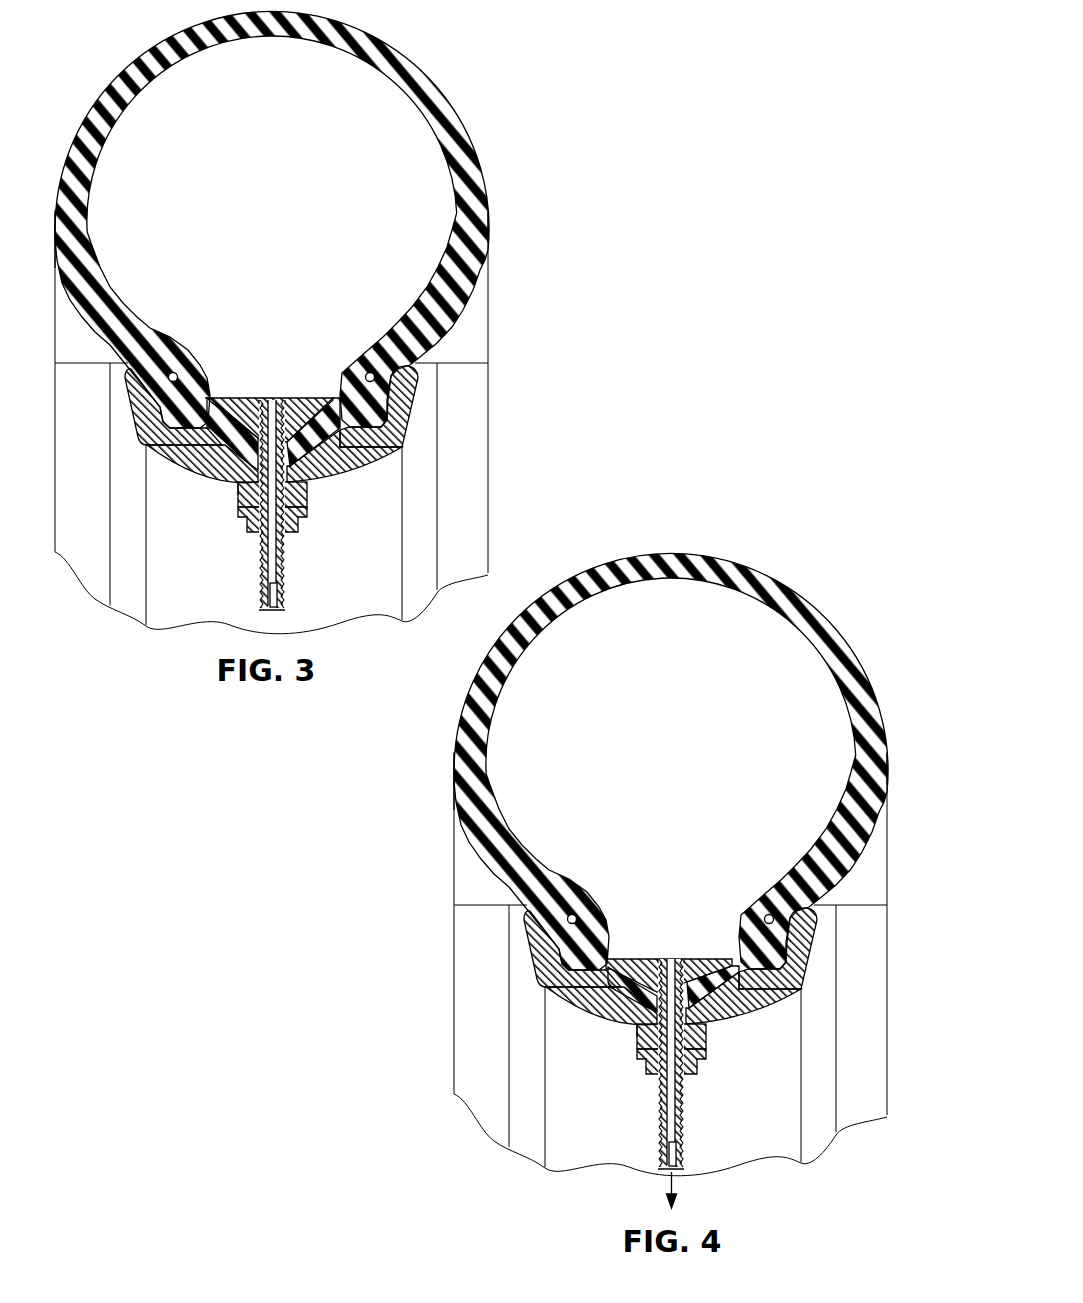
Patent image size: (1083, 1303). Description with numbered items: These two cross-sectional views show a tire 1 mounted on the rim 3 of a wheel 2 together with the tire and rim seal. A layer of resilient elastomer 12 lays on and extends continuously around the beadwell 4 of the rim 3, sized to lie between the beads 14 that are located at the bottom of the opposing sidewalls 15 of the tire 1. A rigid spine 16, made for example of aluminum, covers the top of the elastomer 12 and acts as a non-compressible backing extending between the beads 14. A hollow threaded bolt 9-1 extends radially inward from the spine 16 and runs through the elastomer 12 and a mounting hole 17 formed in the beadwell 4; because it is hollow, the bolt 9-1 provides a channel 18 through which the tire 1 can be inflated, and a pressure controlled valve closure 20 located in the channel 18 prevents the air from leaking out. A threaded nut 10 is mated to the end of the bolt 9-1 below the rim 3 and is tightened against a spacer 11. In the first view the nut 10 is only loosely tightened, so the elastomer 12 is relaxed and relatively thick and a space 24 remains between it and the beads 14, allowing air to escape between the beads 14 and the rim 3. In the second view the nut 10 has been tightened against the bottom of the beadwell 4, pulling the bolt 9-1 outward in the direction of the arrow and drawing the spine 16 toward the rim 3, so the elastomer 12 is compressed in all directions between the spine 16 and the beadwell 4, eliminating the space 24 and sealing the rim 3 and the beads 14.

In FIG. 3, the tire 1 is at (460, 91).
In FIG. 4, the tire 1 is at (671, 771).
In FIG. 3, the wheel 2 is at (500, 477).
In FIG. 4, the wheel 2 is at (633, 964).
In FIG. 3, the rim 3 is at (410, 387).
In FIG. 4, the rim 3 is at (610, 948).
In FIG. 3, the beadwell 4 is at (325, 453).
In FIG. 4, the beadwell 4 is at (743, 1002).
In FIG. 3, the threaded bolt 9-1 is at (258, 558).
In FIG. 4, the threaded bolt 9-1 is at (630, 1063).
In FIG. 3, the threaded nut 10 is at (300, 519).
In FIG. 4, the threaded nut 10 is at (704, 1068).
In FIG. 3, the spacer 11 is at (307, 495).
In FIG. 4, the spacer 11 is at (706, 1040).
In FIG. 3, the elastomer 12 is at (240, 453).
In FIG. 4, the elastomer 12 is at (601, 1013).
In FIG. 3, the beads 14 is at (176, 374).
In FIG. 4, the beads 14 is at (671, 876).
In FIG. 3, the sidewalls 15 is at (58, 212).
In FIG. 4, the sidewalls 15 is at (675, 758).
In FIG. 3, the rigid spine 16 is at (302, 398).
In FIG. 4, the rigid spine 16 is at (669, 940).
In FIG. 3, the mounting hole 17 is at (244, 488).
In FIG. 4, the mounting hole 17 is at (609, 1046).
In FIG. 3, the channel 18 is at (287, 555).
In FIG. 4, the channel 18 is at (714, 1064).
In FIG. 3, the pressure controlled valve closure 20 is at (274, 597).
In FIG. 4, the pressure controlled valve closure 20 is at (719, 1145).
In FIG. 3, the space 24 is at (209, 398).